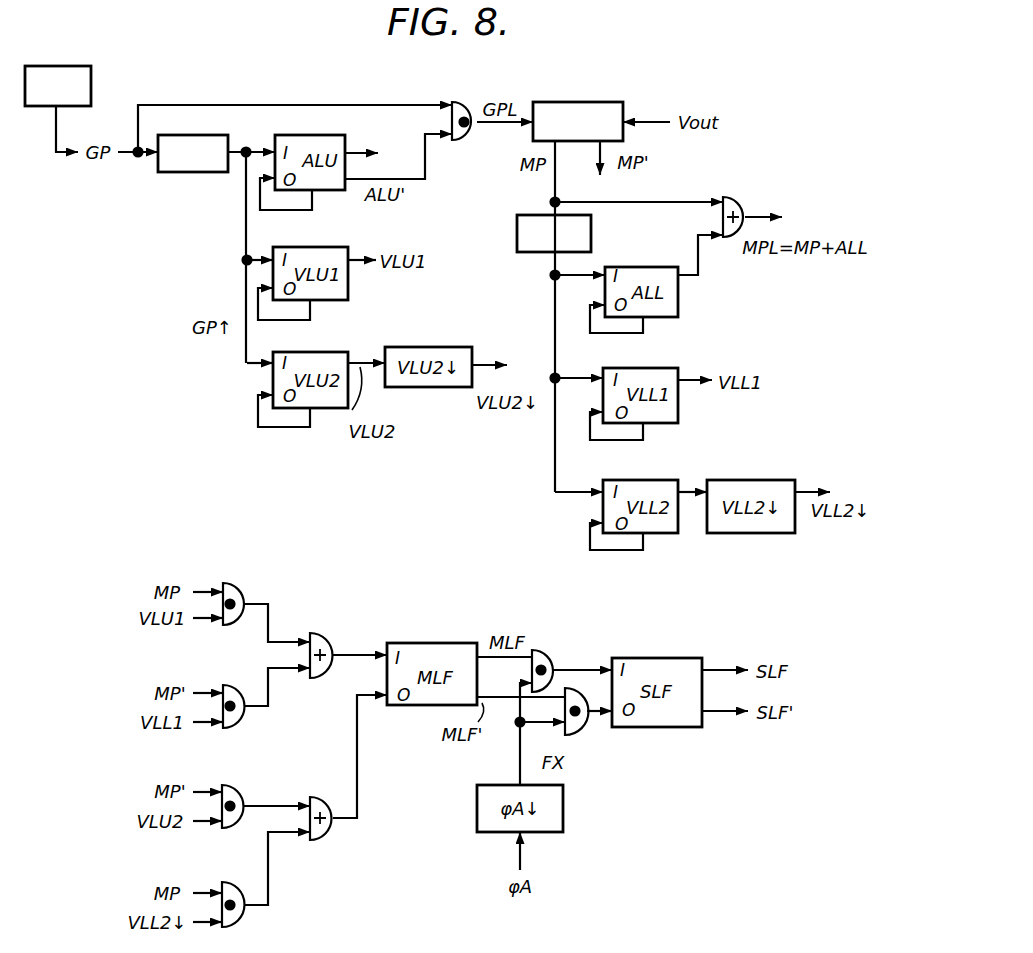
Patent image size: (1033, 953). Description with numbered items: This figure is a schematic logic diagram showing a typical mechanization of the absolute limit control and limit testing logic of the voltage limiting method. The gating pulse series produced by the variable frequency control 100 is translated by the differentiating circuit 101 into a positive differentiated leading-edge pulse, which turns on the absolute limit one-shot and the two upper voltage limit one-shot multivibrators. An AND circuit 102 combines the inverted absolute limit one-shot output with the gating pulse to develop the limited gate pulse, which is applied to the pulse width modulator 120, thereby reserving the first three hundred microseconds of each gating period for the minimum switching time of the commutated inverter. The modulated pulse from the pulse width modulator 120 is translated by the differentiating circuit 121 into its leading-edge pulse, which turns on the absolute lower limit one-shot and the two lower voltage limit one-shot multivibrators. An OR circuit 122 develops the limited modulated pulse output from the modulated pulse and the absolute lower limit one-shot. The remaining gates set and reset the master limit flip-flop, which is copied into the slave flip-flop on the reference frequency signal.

The variable frequency control 100 is at (54, 63).
The differentiating circuit 101 is at (188, 176).
The AND circuit 102 is at (470, 141).
The pulse width modulator 120 is at (599, 101).
The differentiating circuit 121 is at (515, 232).
The OR circuit 122 is at (741, 203).